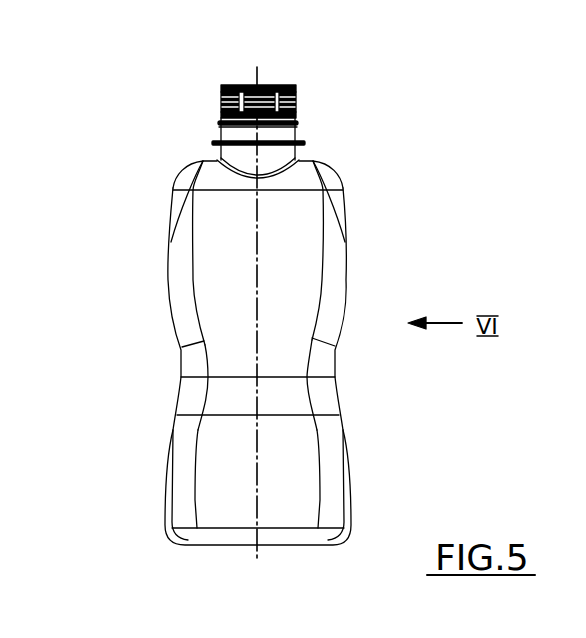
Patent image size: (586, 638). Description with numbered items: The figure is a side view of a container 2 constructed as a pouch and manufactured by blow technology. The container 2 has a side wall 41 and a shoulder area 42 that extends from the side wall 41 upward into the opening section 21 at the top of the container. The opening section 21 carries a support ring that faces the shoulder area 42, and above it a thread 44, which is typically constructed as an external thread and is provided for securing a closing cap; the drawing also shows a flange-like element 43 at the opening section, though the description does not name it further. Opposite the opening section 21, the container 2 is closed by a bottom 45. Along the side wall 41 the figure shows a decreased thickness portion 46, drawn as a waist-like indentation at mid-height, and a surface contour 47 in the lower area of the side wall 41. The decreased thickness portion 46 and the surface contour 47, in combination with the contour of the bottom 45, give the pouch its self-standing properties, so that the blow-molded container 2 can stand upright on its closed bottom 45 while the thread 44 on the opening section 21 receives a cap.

The container 2 is at (127, 260).
The opening section 21 is at (283, 86).
The thread 44 is at (220, 98).
The flange 43 is at (304, 139).
The shoulder area 42 is at (337, 169).
The side wall 41 is at (345, 278).
The decreased thickness portion 46 is at (338, 369).
The surface contour 47 is at (193, 457).
The bottom 45 is at (213, 547).